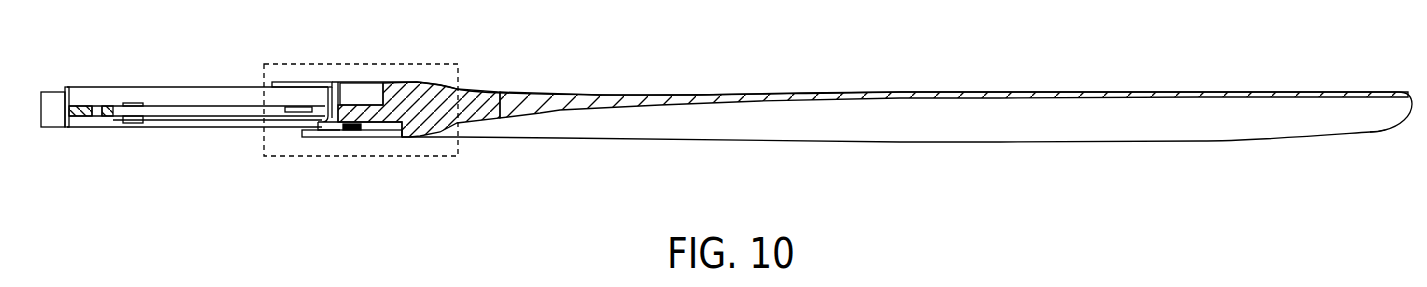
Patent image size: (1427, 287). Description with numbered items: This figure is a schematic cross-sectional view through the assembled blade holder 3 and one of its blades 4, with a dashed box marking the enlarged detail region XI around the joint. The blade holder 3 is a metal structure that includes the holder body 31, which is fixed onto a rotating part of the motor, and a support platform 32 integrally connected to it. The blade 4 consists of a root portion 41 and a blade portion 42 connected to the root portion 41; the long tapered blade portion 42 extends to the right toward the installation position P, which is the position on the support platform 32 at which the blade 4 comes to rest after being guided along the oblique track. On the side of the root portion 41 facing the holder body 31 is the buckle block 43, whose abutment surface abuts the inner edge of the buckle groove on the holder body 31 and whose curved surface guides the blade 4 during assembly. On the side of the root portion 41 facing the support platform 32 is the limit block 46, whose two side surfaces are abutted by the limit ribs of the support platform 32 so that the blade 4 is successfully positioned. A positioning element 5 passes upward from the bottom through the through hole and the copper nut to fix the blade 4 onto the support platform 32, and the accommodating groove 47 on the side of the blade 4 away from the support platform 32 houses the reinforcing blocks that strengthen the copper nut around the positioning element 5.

The blade holder 3 is at (198, 85).
The holder body 31 is at (326, 98).
The accommodating groove 47 is at (361, 88).
The root portion 41 is at (420, 96).
The limit block 46 is at (378, 108).
The buckle block 43 is at (326, 122).
The positioning element 5 is at (346, 140).
The support platform 32 is at (355, 132).
The blade 4 is at (705, 93).
The blade portion 42 is at (998, 93).
The installation position P is at (1360, 148).
The detail region XI is at (283, 157).